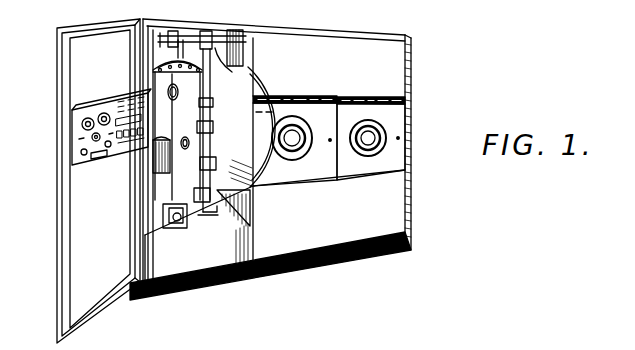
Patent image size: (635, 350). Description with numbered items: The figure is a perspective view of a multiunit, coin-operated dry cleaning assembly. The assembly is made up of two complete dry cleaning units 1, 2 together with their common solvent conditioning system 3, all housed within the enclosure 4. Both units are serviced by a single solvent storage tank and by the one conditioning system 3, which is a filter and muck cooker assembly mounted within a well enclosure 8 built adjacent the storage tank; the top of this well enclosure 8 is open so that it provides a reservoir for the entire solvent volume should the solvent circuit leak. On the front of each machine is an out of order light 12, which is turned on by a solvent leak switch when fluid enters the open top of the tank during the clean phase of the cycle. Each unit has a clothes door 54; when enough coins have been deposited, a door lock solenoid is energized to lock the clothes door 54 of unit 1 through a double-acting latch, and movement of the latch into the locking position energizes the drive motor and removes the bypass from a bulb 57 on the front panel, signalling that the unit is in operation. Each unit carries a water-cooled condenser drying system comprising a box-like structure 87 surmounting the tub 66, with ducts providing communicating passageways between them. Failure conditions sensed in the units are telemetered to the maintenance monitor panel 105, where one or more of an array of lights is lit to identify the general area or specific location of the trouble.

The dry cleaning unit 1 is at (386, 166).
The dry cleaning unit 2 is at (318, 166).
The solvent conditioning system 3 is at (228, 90).
The enclosure 4 is at (170, 130).
The well enclosure 8 is at (200, 250).
The out of order light 12 is at (353, 110).
The clothes door 54 is at (387, 129).
The bulb 57 is at (341, 110).
The tub 66 is at (238, 120).
The box-like structure 87 is at (242, 78).
The maintenance monitor panel 105 is at (70, 151).